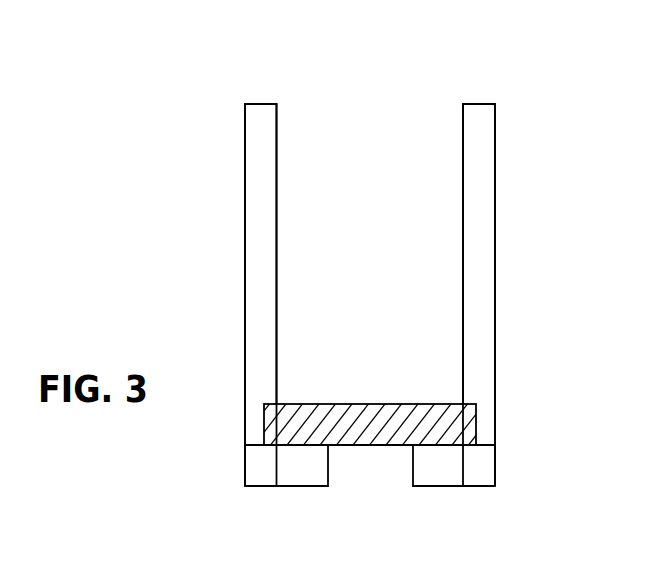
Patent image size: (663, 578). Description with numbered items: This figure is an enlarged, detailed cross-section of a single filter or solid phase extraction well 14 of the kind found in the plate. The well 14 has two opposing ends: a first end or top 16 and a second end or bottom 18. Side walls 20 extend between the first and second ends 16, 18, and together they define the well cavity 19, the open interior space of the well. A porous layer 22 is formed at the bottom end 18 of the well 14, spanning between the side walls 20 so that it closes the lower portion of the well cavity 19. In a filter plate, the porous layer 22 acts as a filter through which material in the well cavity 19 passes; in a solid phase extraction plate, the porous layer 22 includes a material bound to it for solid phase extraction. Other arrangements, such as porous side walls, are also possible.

The well 14 is at (436, 90).
The first end 16 is at (342, 90).
The second end 18 is at (354, 493).
The well cavity 19 is at (372, 178).
The side walls 20 is at (495, 292).
The porous layer 22 is at (376, 403).